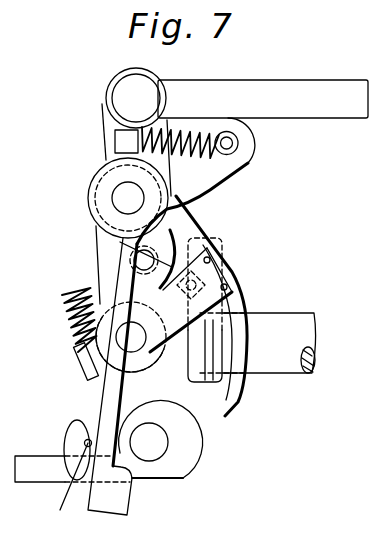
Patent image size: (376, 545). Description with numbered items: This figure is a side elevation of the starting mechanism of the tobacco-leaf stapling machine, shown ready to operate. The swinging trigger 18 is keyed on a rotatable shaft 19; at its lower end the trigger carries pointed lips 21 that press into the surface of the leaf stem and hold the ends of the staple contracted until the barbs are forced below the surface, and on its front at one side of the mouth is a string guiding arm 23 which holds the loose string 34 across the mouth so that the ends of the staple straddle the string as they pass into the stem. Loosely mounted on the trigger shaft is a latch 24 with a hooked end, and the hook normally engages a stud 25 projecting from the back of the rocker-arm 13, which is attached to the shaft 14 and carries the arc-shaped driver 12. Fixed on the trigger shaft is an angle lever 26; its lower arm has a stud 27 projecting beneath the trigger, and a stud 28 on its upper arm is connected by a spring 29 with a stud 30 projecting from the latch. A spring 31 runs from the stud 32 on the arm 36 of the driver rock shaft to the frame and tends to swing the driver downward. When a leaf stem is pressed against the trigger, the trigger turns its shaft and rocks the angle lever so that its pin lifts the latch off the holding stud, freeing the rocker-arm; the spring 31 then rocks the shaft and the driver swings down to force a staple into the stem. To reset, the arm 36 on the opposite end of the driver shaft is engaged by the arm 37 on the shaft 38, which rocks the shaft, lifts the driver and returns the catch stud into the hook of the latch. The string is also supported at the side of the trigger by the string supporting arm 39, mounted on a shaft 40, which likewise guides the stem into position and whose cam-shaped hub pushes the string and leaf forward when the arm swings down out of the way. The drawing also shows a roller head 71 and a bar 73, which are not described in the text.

The arc-shaped driver 12 is at (238, 405).
The rocker-arm 13 is at (205, 351).
The shaft 14 is at (150, 360).
The swinging trigger 18 is at (97, 403).
The rotatable shaft 19 is at (114, 196).
The pointed lips 21 is at (90, 428).
The string guiding arm 23 is at (64, 433).
The latch 24 is at (200, 227).
The stud 25 is at (205, 295).
The angle lever 26 is at (256, 148).
The stud 27 is at (130, 262).
The stud 28 is at (238, 152).
The spring 29 is at (197, 156).
The stud 30 is at (143, 143).
The spring 31 is at (63, 312).
The stud 32 is at (76, 352).
The loose string 34 is at (62, 481).
The arm 36 is at (184, 299).
The arm 37 is at (208, 384).
The shaft 38 is at (296, 313).
The string supporting arm 39 is at (183, 480).
The shaft 40 is at (168, 445).
The roller head 71 is at (102, 108).
The bar 73 is at (332, 80).